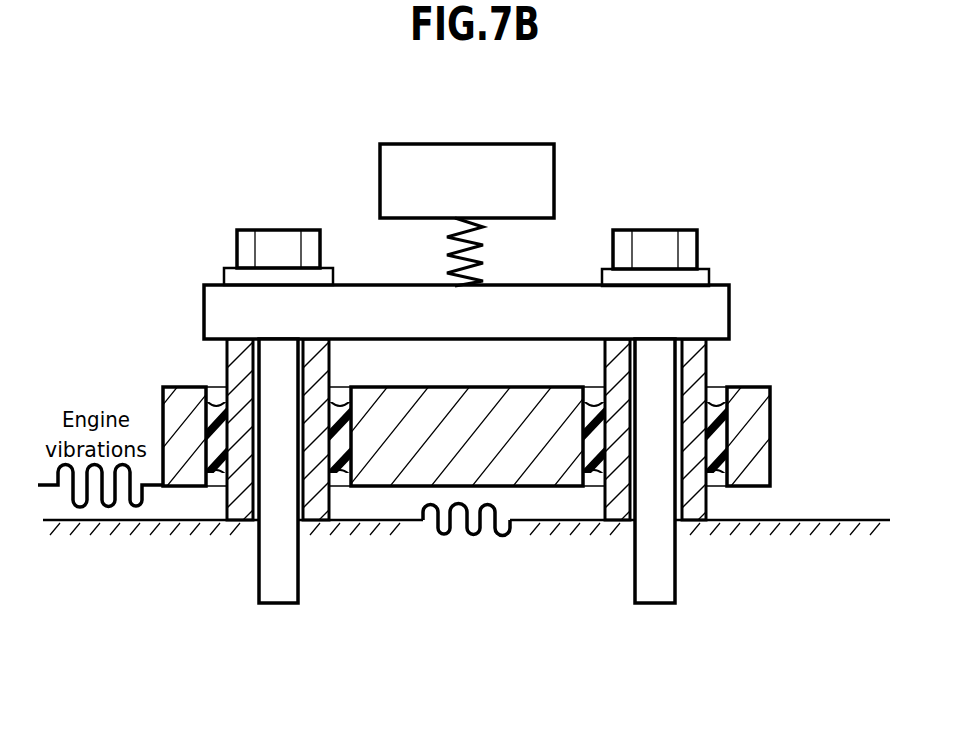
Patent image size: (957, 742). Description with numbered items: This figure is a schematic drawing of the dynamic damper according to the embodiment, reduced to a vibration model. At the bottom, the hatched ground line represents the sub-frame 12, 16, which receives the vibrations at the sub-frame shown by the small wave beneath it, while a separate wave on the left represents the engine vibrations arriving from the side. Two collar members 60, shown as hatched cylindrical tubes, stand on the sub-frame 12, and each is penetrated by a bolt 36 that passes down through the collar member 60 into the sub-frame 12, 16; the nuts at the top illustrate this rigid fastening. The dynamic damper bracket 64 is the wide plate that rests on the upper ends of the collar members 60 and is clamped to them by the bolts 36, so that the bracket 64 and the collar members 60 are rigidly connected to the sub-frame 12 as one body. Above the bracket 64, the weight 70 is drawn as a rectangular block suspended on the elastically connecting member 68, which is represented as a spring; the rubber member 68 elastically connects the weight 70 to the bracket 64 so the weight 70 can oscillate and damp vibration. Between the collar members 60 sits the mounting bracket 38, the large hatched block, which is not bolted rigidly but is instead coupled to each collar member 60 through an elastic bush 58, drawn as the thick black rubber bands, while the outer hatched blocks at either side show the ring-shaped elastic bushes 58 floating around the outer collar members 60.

The sub-frame 12 is at (466, 535).
The sub-frame member 16 is at (788, 520).
The bolt 36 is at (281, 239).
The mounting bracket 38 is at (550, 492).
The elastic bush 58 is at (200, 418).
The collar member 60 is at (230, 366).
The dynamic damper bracket 64 is at (736, 313).
The elastically connecting member 68 is at (483, 250).
The weight 70 is at (467, 150).